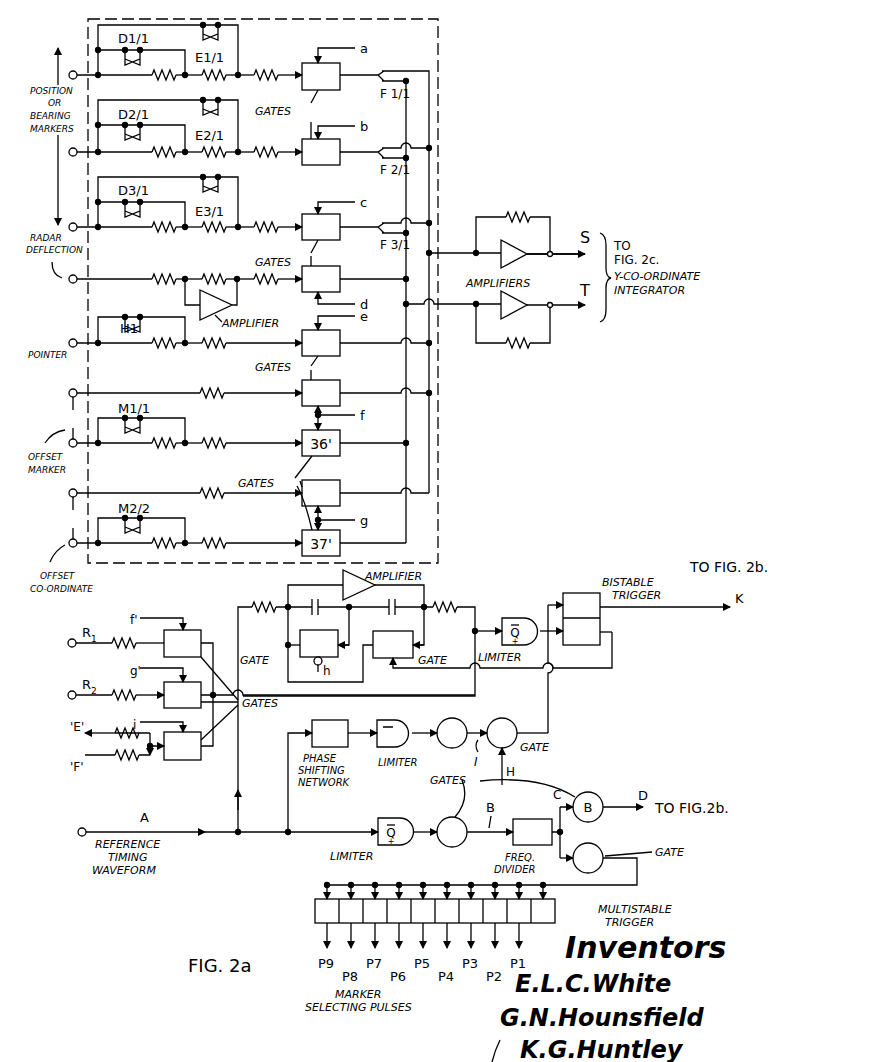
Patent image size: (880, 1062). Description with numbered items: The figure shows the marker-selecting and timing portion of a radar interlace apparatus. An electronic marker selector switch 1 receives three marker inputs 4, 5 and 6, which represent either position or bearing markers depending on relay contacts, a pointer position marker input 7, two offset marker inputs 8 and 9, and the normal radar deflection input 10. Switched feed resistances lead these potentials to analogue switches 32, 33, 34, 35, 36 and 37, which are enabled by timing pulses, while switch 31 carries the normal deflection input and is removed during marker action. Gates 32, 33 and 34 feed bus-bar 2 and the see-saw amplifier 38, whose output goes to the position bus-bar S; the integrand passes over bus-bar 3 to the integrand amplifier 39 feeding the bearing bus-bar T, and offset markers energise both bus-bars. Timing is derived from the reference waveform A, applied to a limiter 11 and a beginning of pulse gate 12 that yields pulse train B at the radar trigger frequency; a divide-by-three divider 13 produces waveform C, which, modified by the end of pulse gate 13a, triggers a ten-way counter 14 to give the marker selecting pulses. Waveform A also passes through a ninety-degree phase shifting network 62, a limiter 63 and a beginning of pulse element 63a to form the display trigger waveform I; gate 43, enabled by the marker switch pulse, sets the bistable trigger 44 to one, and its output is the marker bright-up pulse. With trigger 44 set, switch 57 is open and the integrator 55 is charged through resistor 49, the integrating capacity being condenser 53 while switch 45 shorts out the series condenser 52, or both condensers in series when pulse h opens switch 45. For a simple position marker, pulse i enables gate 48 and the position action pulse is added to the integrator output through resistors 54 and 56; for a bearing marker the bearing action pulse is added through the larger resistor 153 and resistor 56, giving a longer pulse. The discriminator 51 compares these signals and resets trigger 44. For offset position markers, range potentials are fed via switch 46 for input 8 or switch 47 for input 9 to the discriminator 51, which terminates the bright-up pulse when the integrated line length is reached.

The selector switch 1 is at (425, 44).
The bus-bar 2 is at (448, 260).
The bus-bar 3 is at (448, 311).
The input 4 is at (110, 66).
The input 5 is at (110, 143).
The input 6 is at (110, 219).
The pointer position marker input 7 is at (110, 334).
The offset marker input 8 is at (134, 418).
The offset marker input 9 is at (134, 518).
The normal radar deflection input 10 is at (108, 270).
The limiter 11 is at (396, 819).
The beginning of pulse gate 12 is at (452, 820).
The divider 13 is at (532, 819).
The end of pulse gate 13a is at (600, 852).
The 10-way counter 14 is at (556, 912).
The switch 31 is at (321, 279).
The analogue switch 32 is at (321, 76).
The analogue switch 33 is at (321, 152).
The analogue switch 34 is at (321, 227).
The analogue switch 35 is at (321, 343).
The analogue switch 36 is at (321, 393).
The analogue switch 37 is at (321, 493).
The amplifier 38 is at (530, 241).
The integrand amplifier 39 is at (530, 316).
The gate 43 is at (502, 726).
The bistable trigger 44 is at (581, 611).
The switch 45 is at (319, 651).
The switch 46 is at (182, 643).
The switch 47 is at (182, 695).
The gate 48 is at (182, 746).
The resistor 49 is at (262, 599).
The discriminator 51 is at (520, 624).
The condenser 52 is at (309, 600).
The condenser 53 is at (400, 600).
The resistor 54 is at (117, 763).
The integrator 55 is at (359, 585).
The resistor 56 is at (445, 599).
The switch 57 is at (393, 644).
The 90° phase shifting network 62 is at (330, 725).
The limiter 63 is at (393, 725).
The beginning of pulse element 63a is at (451, 726).
The resistor 153 is at (117, 729).